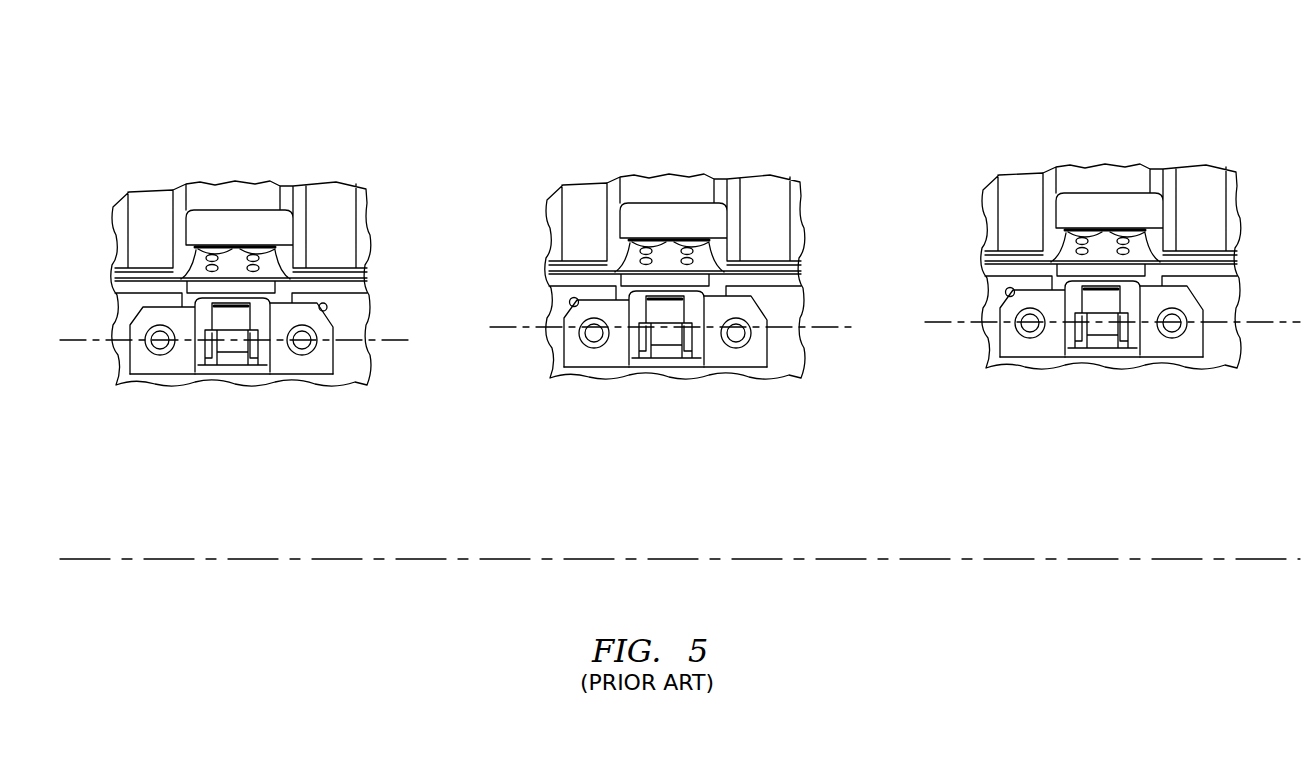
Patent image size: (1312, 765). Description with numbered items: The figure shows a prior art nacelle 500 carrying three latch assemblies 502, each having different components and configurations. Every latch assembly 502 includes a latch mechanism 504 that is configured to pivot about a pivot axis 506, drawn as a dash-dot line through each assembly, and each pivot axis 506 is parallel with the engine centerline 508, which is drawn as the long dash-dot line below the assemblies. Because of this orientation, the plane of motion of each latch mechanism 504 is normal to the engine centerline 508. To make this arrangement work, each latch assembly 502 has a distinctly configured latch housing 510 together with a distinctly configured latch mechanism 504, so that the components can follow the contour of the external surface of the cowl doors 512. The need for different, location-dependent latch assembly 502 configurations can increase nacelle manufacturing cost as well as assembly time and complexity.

The nacelle 500 is at (685, 250).
The latch assembly 502 is at (338, 307).
The latch mechanism 504 is at (230, 362).
The pivot axis 506 is at (85, 342).
The engine centerline 508 is at (1248, 560).
The latch housing 510 is at (175, 367).
The cowl door 512 is at (343, 378).